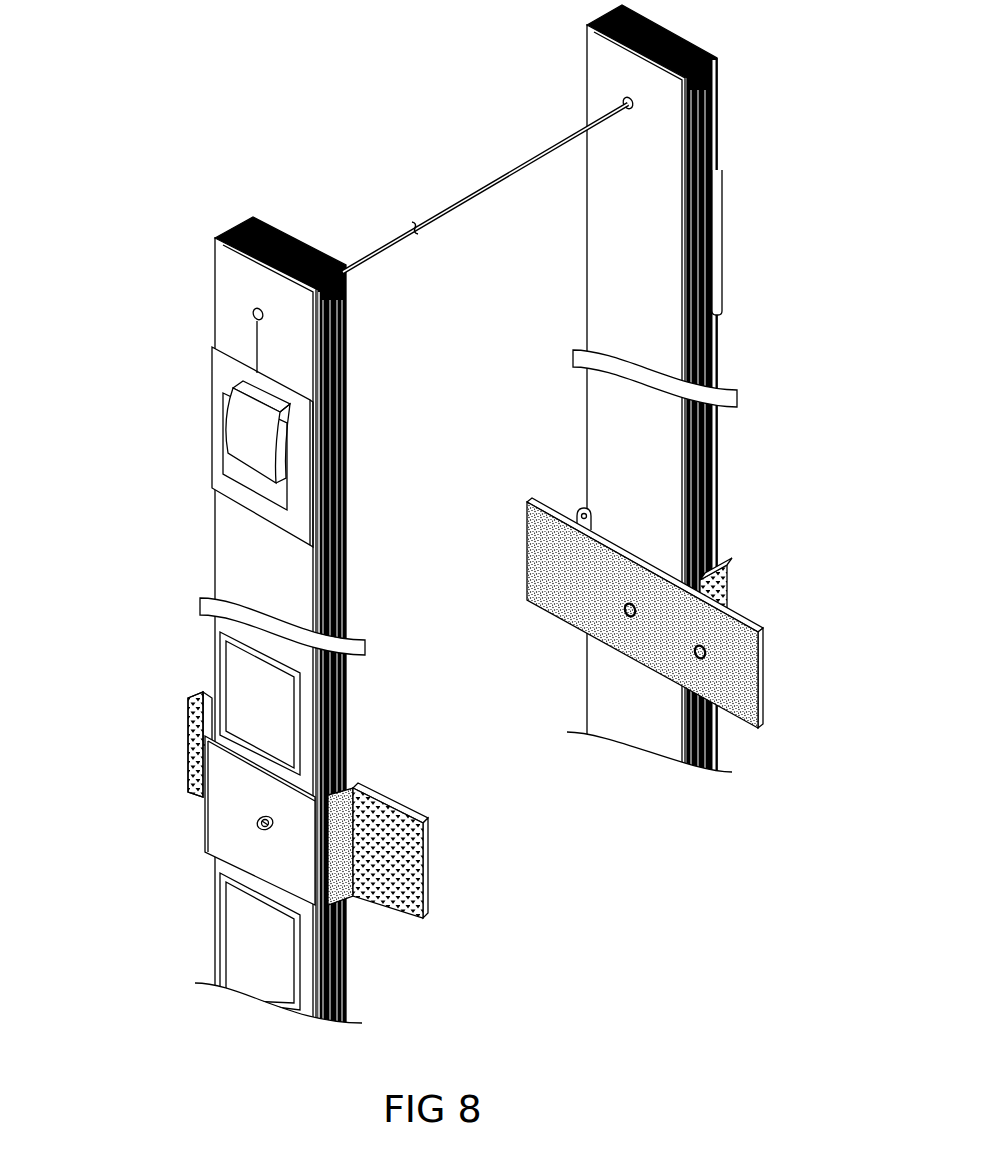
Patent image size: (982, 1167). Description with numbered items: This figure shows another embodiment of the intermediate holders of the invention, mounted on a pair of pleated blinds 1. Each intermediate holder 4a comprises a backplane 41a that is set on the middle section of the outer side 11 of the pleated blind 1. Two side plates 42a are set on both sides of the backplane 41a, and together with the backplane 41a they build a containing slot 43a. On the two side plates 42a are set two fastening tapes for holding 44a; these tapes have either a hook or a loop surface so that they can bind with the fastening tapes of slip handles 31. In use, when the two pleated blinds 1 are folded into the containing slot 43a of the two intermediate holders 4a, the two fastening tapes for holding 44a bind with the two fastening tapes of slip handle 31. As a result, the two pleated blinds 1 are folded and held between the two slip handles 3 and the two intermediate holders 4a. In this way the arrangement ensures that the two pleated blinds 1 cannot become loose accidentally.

The pleated blind 1 is at (204, 290).
The outer side 11 is at (225, 322).
The slip handle 3 is at (444, 850).
The fastening tape of slip handle 31 is at (417, 877).
The intermediate holder 4a is at (433, 742).
The backplane 41a is at (235, 848).
The side plate 42a is at (212, 738).
The containing slot 43a is at (220, 757).
The fastening tape for holding 44a is at (347, 825).